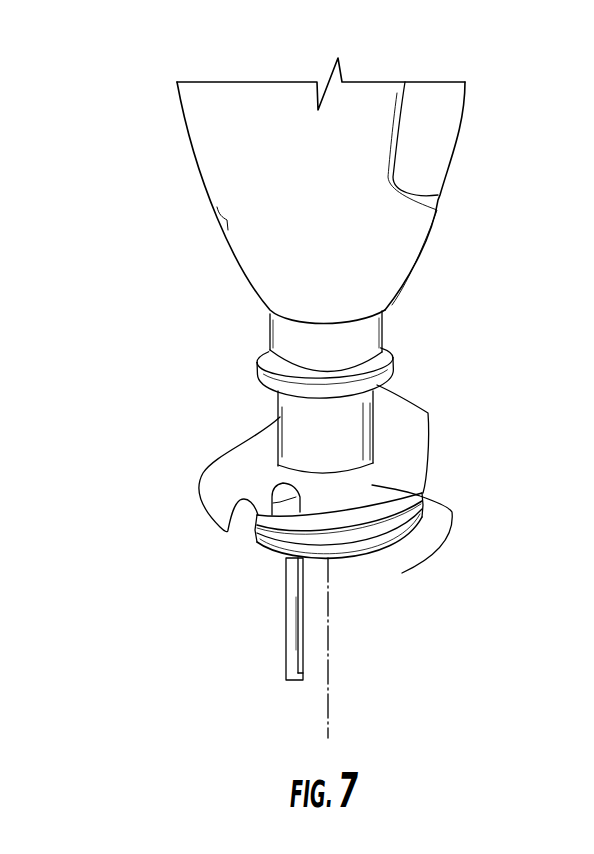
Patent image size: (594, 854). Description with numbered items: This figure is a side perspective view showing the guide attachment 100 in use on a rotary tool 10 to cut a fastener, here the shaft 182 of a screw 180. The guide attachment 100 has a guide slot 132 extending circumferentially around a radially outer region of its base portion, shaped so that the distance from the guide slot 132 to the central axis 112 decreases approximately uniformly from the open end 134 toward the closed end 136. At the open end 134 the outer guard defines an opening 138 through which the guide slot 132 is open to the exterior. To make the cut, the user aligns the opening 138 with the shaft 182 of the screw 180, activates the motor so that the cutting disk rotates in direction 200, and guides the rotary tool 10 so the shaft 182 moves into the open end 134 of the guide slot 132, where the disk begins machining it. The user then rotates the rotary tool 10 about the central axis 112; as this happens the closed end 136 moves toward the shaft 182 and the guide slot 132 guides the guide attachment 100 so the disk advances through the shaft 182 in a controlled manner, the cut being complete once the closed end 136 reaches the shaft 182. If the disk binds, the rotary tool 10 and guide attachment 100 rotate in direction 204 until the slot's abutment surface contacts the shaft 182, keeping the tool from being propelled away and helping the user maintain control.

The rotary tool 10 is at (160, 148).
The guide attachment 100 is at (435, 340).
The direction 204 is at (268, 401).
The direction 200 is at (378, 577).
The closed end 136 is at (376, 486).
The open end 134 is at (260, 493).
The guide slot 132 is at (332, 508).
The opening 138 is at (240, 533).
The shaft 182 is at (287, 587).
The screw 180 is at (264, 615).
The central axis 112 is at (328, 673).